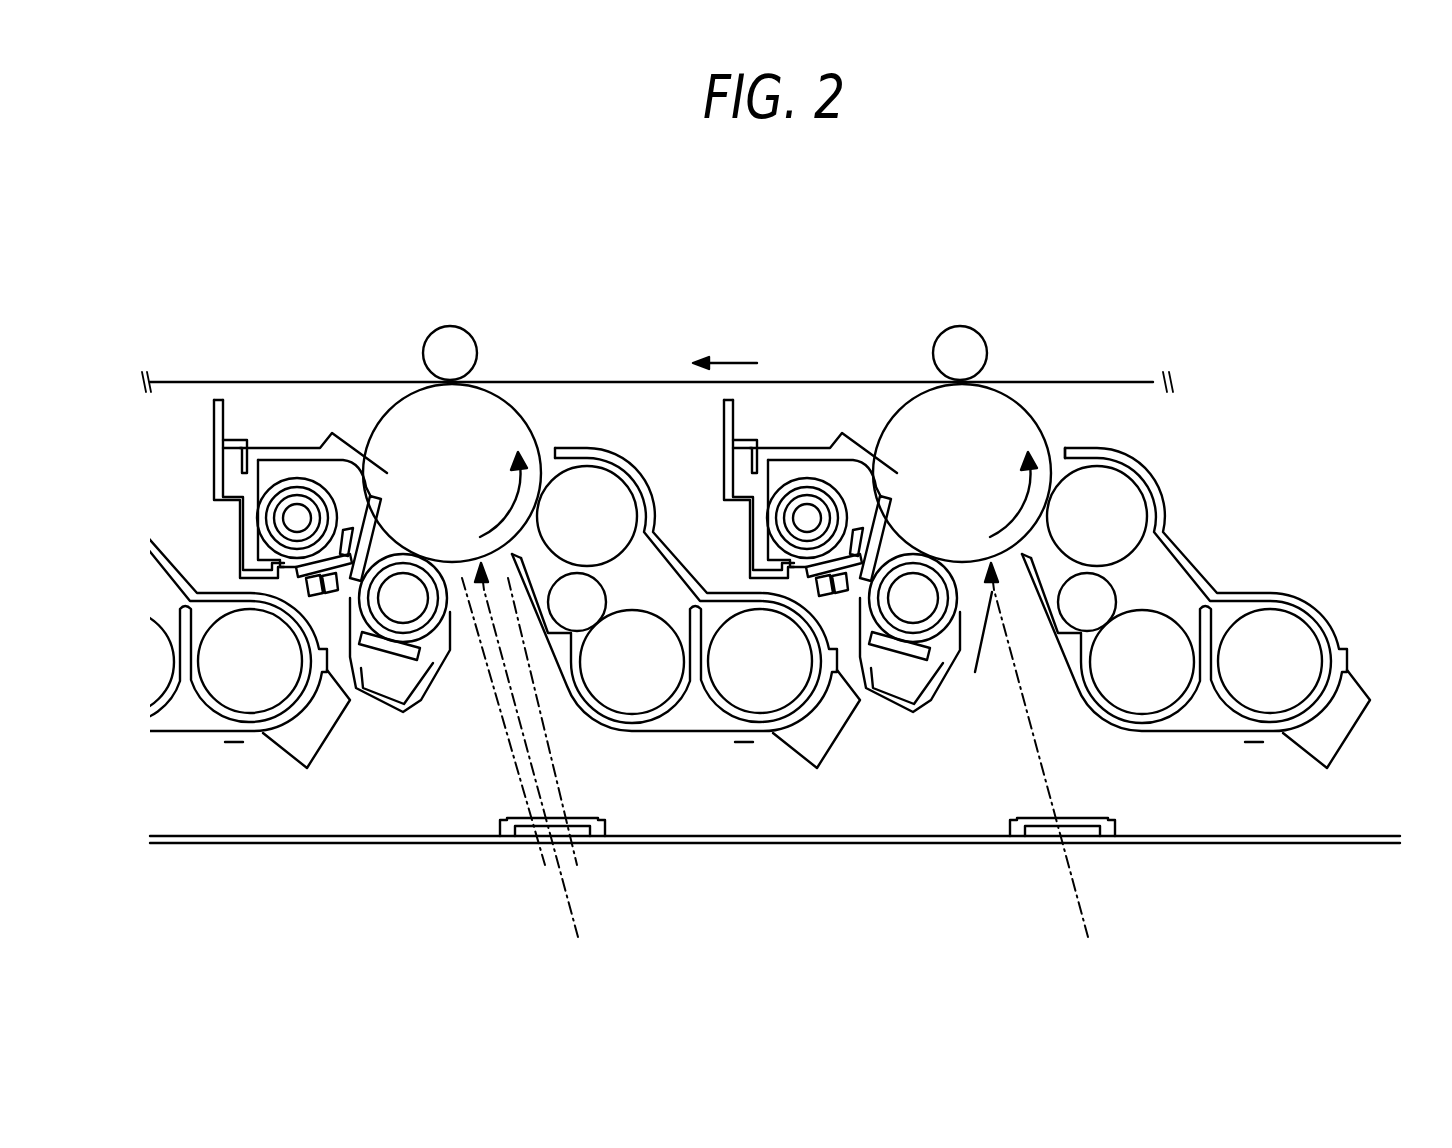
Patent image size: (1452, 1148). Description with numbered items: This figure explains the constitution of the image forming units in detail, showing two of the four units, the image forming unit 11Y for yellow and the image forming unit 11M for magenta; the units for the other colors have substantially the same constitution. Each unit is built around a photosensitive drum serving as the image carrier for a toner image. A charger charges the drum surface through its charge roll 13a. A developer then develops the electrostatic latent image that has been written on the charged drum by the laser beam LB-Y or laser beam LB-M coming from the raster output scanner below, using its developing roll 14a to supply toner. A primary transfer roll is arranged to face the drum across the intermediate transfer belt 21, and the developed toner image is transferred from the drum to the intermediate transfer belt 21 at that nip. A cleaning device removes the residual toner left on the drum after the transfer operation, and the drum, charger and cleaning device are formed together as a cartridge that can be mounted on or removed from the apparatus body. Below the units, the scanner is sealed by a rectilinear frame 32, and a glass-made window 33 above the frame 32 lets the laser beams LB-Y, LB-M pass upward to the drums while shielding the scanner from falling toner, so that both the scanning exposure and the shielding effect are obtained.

The image forming unit for magenta 11M is at (537, 500).
The image forming unit for yellow 11Y is at (1047, 499).
The charge roll 13a is at (979, 650).
The developing roll 14a is at (1063, 462).
The intermediate transfer belt 21 is at (1152, 382).
The frame 32 is at (1193, 836).
The window 33 is at (580, 818).
The laser beam for magenta LB-M is at (578, 912).
The laser beam for yellow LB-Y is at (1088, 903).